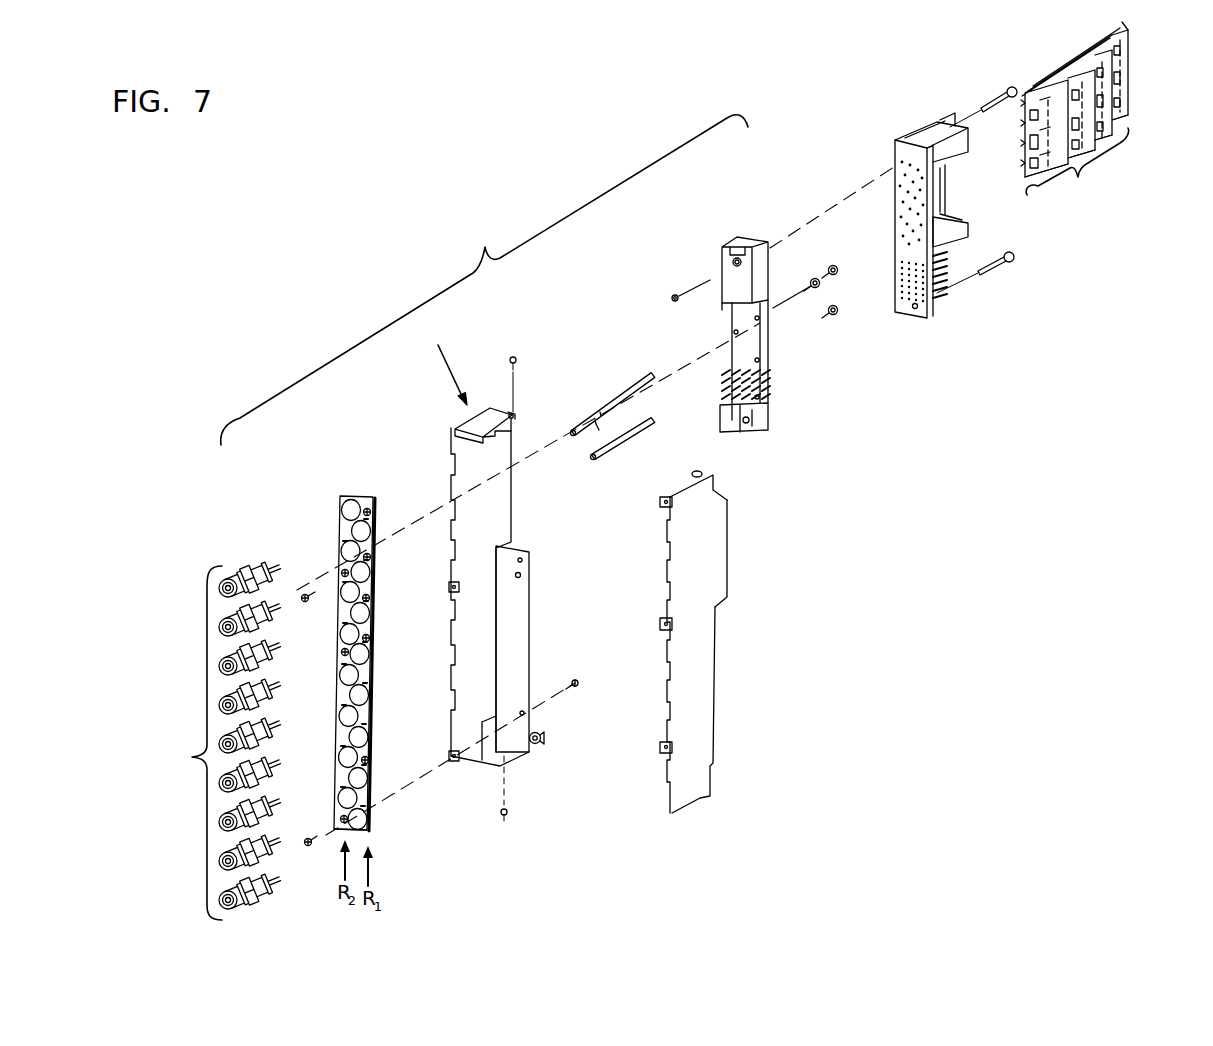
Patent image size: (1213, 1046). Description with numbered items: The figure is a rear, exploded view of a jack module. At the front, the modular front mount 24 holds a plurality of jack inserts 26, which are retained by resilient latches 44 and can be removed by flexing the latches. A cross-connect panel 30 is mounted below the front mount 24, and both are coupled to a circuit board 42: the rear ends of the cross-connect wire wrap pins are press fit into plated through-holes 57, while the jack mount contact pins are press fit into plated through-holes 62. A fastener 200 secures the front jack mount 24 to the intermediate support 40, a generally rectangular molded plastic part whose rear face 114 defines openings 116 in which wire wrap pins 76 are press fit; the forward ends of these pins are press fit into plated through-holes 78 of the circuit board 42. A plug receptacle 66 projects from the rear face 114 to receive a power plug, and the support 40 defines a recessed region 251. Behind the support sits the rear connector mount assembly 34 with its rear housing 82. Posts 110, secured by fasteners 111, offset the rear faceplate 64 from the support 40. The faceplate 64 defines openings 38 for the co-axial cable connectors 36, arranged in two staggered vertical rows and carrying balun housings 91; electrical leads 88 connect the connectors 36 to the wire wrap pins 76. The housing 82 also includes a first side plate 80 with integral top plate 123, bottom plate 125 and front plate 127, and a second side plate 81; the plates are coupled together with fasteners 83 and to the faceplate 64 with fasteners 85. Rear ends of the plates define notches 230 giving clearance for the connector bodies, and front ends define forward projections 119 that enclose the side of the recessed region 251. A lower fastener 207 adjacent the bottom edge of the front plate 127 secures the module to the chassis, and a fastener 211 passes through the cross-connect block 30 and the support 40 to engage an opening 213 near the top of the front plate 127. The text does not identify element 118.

The modular front mount 24 is at (940, 126).
The jack inserts 26 is at (1075, 117).
The cross-connect panel 30 is at (946, 200).
The rear connector mount assembly 34 is at (484, 280).
The co-axial cable connectors 36 is at (225, 714).
The openings 38 is at (343, 509).
The intermediate support 40 is at (736, 314).
The circuit board 42 is at (902, 148).
The resilient latches 44 is at (1122, 22).
The plated through-holes 57 is at (898, 263).
The plated through-holes 62 is at (930, 172).
The rear faceplate 64 is at (367, 827).
The plug receptacle 66 is at (734, 262).
The wire wrap pins 76 is at (758, 413).
The plated through-holes 78 is at (922, 299).
The first side plate 80 is at (729, 643).
The second side plate 81 is at (498, 593).
The rear housing 82 is at (442, 361).
The fasteners 83 is at (517, 360).
The fasteners 85 is at (370, 510).
The electrical leads 88 is at (253, 709).
The balun housings 91 is at (250, 572).
The posts 110 is at (620, 446).
The fasteners 111 is at (306, 594).
The rear face 114 is at (733, 288).
The openings 116 is at (764, 378).
The panel lower portion 118 is at (718, 645).
The forward projections 119 is at (512, 497).
The top plate 123 is at (495, 411).
The bottom plate 125 is at (475, 765).
The front plate 127 is at (542, 630).
The fastener 200 is at (1004, 93).
The lower fastener 207 is at (541, 739).
The fastener 211 is at (1003, 272).
The opening 213 is at (521, 552).
The notches 230 is at (452, 472).
The recessed region 251 is at (733, 332).